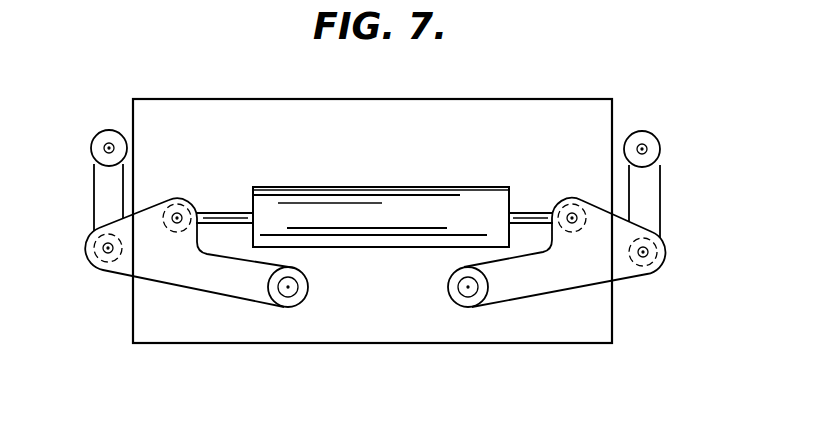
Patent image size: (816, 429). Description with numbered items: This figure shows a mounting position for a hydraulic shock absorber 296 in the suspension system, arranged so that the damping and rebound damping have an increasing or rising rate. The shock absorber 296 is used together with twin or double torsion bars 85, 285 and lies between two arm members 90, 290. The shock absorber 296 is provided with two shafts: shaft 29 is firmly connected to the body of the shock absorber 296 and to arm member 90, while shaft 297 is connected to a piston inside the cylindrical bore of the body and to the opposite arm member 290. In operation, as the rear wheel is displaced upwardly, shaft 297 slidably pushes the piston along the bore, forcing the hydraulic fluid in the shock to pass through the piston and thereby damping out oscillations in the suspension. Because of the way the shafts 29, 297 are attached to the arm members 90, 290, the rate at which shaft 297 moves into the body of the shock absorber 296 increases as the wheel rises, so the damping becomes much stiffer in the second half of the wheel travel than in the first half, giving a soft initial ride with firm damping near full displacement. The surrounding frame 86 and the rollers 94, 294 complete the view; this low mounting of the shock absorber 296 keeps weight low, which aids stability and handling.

The frame 86 is at (189, 108).
The left roller and belt 94 is at (103, 194).
The right roller and belt 294 is at (653, 199).
The arm member 90 is at (204, 278).
The arm member 290 is at (567, 280).
The torsion bar 85 is at (305, 300).
The torsion bar 285 is at (455, 302).
The shaft 29 is at (217, 212).
The shock absorber 296 is at (372, 187).
The shaft 297 is at (530, 212).